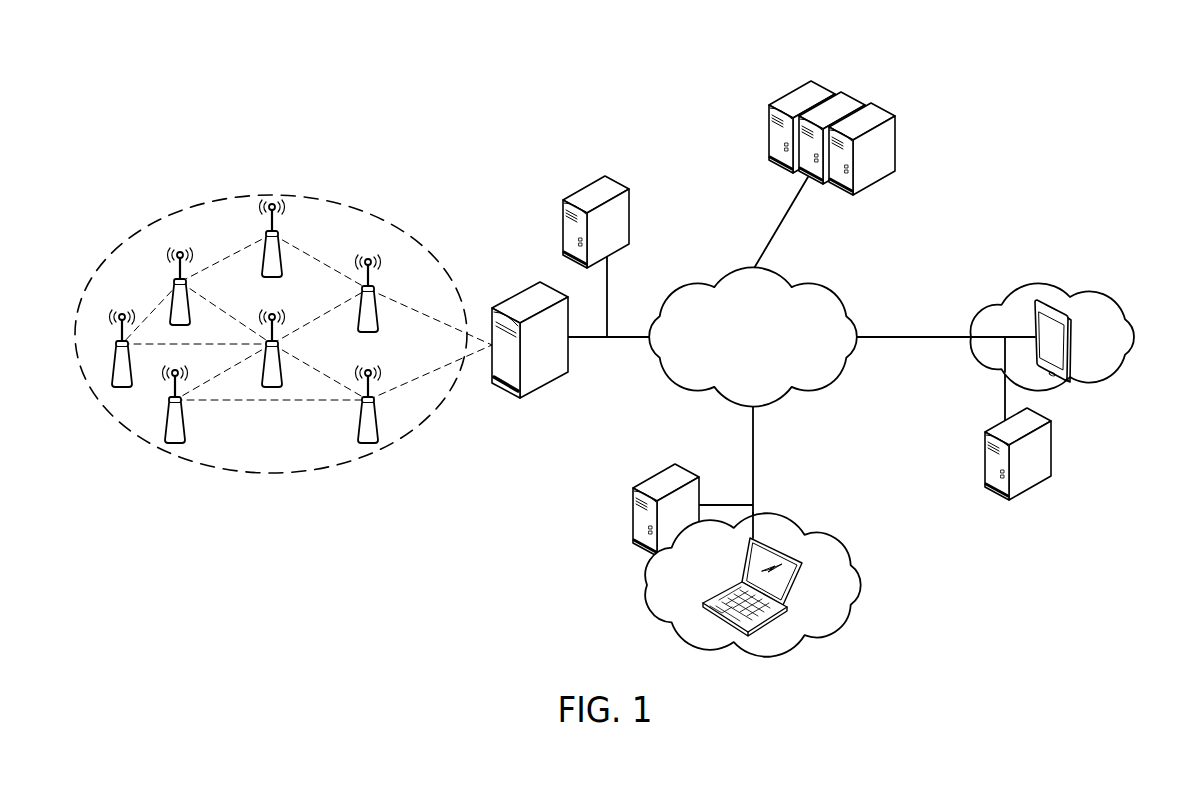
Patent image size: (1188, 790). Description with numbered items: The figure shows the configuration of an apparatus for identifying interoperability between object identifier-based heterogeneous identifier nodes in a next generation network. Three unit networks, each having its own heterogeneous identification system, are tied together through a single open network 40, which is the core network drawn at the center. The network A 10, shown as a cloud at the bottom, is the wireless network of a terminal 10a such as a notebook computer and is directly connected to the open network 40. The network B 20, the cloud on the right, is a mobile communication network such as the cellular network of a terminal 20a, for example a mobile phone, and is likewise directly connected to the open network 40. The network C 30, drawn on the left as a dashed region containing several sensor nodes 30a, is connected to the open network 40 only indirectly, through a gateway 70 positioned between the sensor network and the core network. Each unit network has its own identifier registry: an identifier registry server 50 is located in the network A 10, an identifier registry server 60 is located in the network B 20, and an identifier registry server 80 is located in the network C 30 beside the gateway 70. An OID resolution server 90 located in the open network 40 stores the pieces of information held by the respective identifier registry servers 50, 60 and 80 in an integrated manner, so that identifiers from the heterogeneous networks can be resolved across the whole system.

The network A 10 is at (788, 562).
The terminal 10a is at (790, 545).
The network B 20 is at (1056, 331).
The terminal 20a is at (1070, 367).
The network C 30 is at (283, 367).
The sensor node 30a is at (177, 444).
The open network 40 is at (815, 280).
The identifier registry server 50 is at (633, 518).
The identifier registry server 60 is at (985, 460).
The gateway 70 is at (493, 295).
The identifier registry server 80 is at (629, 213).
The OID resolution server 90 is at (849, 97).